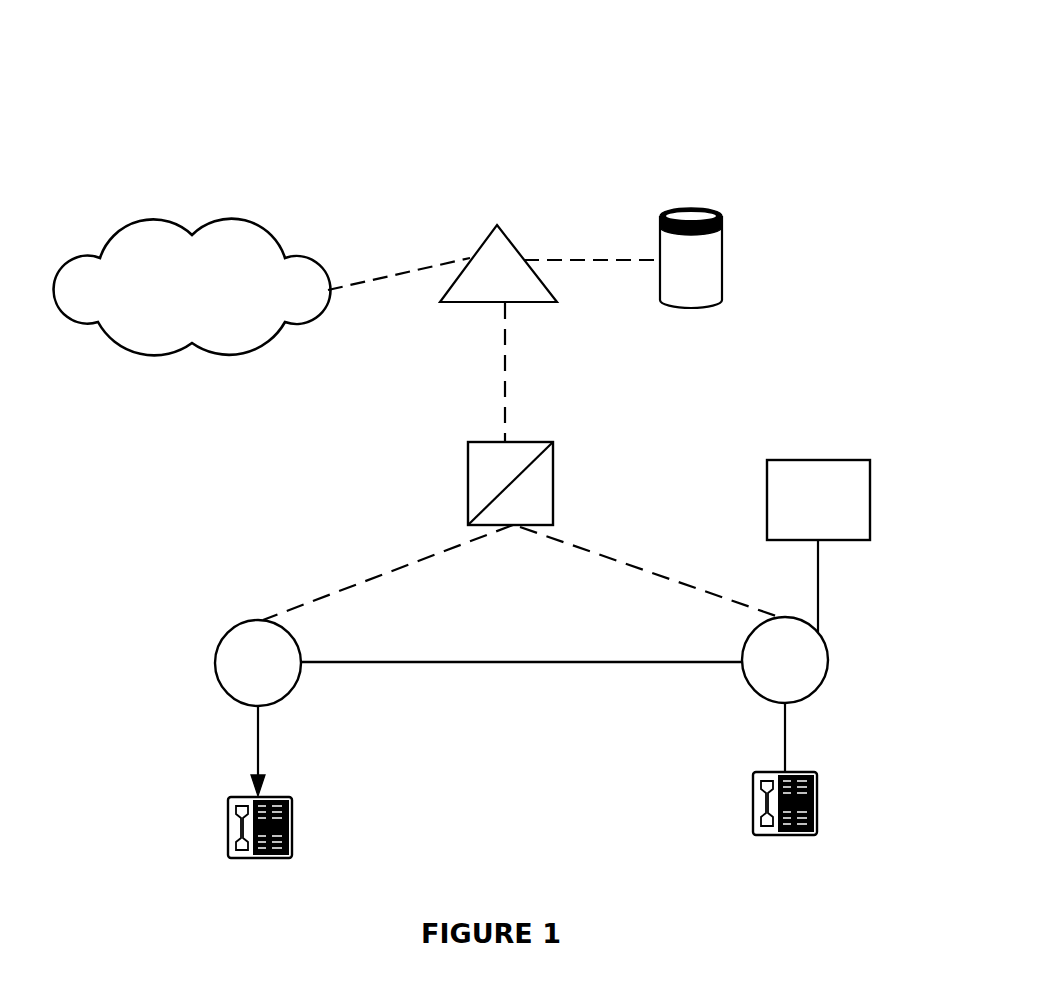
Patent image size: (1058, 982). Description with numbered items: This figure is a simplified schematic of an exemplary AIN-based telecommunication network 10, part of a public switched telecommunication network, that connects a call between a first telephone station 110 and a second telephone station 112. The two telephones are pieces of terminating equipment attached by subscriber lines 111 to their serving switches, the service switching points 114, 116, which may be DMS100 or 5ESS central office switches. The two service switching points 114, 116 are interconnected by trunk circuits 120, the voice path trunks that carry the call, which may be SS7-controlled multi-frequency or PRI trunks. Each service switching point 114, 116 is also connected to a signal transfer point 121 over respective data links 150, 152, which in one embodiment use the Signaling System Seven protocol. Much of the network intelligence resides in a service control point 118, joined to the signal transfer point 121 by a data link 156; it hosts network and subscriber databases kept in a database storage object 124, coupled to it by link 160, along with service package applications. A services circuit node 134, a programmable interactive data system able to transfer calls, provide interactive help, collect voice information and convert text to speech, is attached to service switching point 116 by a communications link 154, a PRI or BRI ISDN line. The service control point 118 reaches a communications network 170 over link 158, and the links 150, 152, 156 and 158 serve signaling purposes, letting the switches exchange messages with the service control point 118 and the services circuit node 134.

The telecommunication network 10 is at (528, 108).
The first telephone station 110 is at (260, 843).
The subscriber lines 111 is at (260, 742).
The second telephone station 112 is at (785, 818).
The service switching point 114 is at (258, 663).
The service switching point 116 is at (785, 660).
The service control point 118 is at (498, 263).
The trunk circuits 120 is at (545, 665).
The signal transfer point 121 is at (510, 483).
The database storage object 124 is at (691, 258).
The services circuit node 134 is at (818, 500).
The data link 150 is at (422, 562).
The data link 152 is at (660, 573).
The communications link 154 is at (820, 604).
The data link 156 is at (506, 378).
The link 158 is at (395, 274).
The link SCP to database 160 is at (613, 260).
The network 170 is at (192, 287).